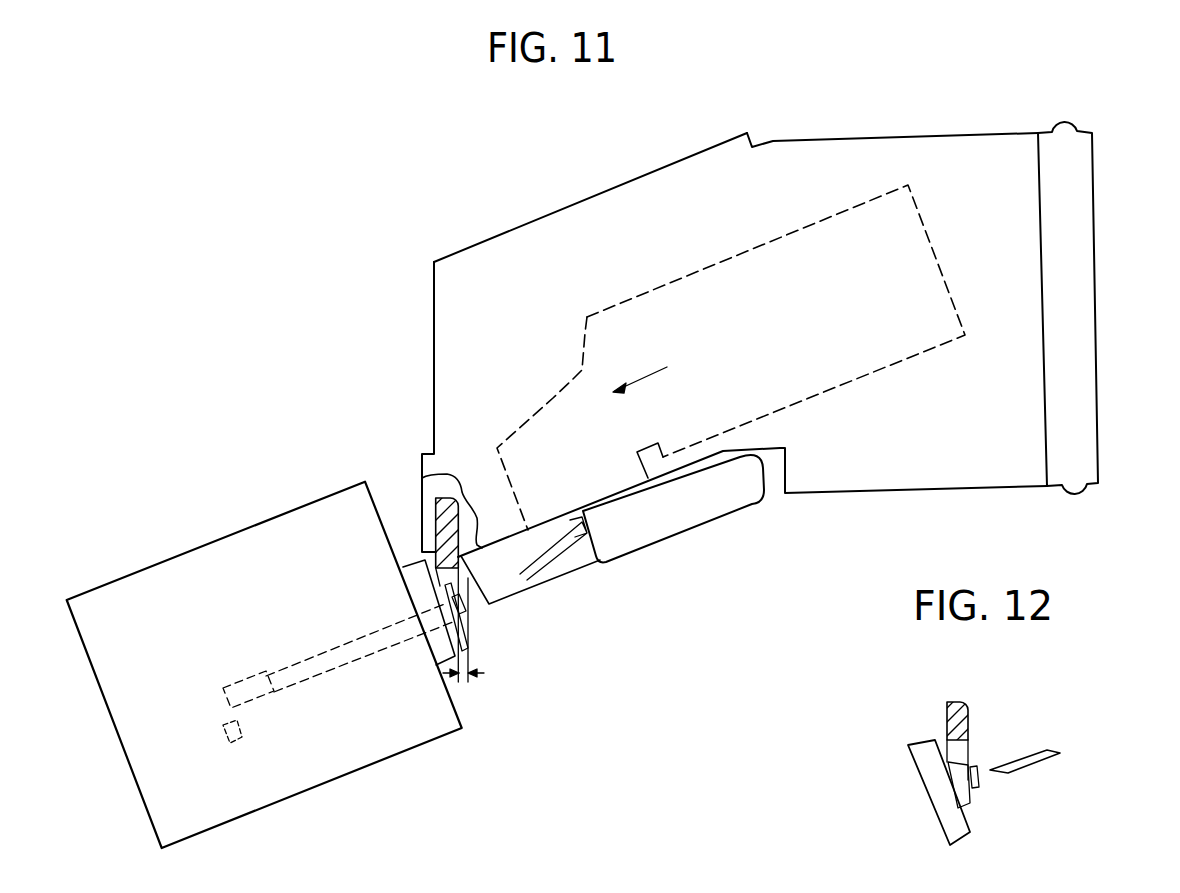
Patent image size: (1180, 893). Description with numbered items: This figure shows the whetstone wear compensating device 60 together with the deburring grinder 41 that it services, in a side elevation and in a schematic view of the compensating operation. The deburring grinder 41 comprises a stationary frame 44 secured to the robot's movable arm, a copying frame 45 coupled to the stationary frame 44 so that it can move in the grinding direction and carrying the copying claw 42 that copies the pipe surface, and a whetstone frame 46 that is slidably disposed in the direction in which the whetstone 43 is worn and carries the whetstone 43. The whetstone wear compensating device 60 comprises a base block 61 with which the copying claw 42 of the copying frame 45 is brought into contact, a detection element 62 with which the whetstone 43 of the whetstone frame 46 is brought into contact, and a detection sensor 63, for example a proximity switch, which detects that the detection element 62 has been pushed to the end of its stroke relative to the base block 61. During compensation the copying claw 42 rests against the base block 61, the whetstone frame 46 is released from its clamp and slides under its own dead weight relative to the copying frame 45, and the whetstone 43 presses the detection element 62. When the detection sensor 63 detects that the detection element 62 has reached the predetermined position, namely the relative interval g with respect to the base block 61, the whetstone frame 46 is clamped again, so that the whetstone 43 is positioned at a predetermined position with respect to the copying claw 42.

In FIG. 11, the deburring grinder 41 is at (643, 176).
In FIG. 11, the copying claw 42 is at (434, 515).
In FIG. 12, the copying claw 42 is at (970, 723).
In FIG. 11, the whetstone 43 is at (563, 577).
In FIG. 12, the whetstone 43 is at (1050, 753).
In FIG. 11, the stationary frame 44 is at (1082, 158).
In FIG. 11, the copying frame 45 is at (537, 216).
In FIG. 11, the whetstone frame 46 is at (663, 285).
In FIG. 11, the whetstone wear compensating device 60 is at (182, 554).
In FIG. 11, the base block 61 is at (464, 634).
In FIG. 12, the base block 61 is at (963, 808).
In FIG. 11, the detection element 62 is at (470, 607).
In FIG. 12, the detection element 62 is at (978, 788).
In FIG. 11, the detection sensor 63 is at (222, 735).
In FIG. 11, the relative interval g is at (470, 682).